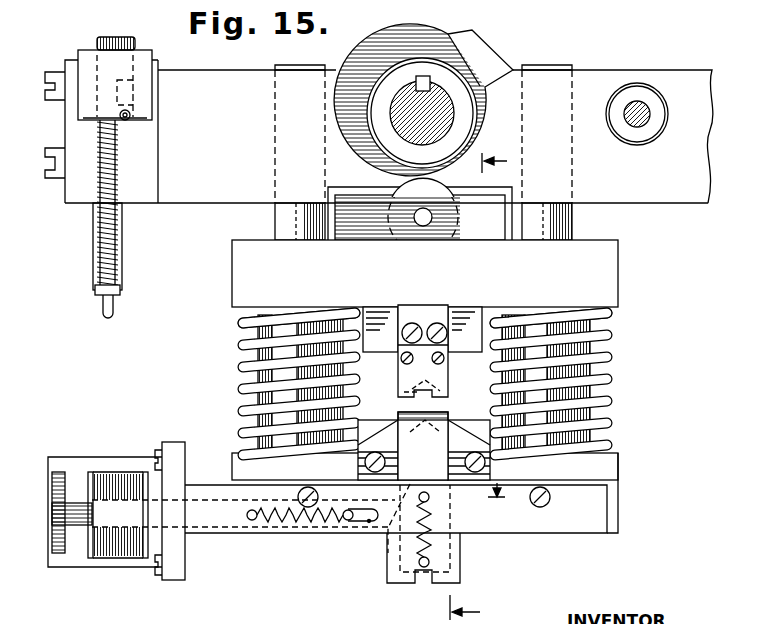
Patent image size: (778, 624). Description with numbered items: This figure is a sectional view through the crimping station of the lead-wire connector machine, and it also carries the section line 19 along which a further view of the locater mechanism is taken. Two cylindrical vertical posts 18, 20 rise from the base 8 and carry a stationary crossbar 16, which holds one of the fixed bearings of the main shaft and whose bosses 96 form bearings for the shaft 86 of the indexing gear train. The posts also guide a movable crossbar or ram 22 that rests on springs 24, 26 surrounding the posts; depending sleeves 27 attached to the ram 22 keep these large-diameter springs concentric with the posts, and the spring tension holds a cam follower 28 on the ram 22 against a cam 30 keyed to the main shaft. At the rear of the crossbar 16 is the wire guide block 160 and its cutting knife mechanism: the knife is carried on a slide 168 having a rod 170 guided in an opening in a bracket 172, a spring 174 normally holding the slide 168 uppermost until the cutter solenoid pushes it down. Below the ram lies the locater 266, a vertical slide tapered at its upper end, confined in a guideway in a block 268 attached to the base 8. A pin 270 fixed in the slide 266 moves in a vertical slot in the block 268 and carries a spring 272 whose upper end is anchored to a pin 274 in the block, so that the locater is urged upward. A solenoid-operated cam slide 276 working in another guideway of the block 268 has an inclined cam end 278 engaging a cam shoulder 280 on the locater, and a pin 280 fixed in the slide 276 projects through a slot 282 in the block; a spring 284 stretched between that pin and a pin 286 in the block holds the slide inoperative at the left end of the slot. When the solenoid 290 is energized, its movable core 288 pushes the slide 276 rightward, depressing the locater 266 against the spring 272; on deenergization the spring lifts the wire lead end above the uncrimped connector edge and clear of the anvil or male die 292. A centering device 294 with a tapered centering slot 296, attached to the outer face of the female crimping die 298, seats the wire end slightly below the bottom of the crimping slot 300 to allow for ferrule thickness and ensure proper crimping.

The base 8 is at (607, 463).
The crossbar 16 is at (188, 196).
The vertical post 18 is at (290, 222).
The section line 19 is at (484, 381).
The vertical post 20 is at (548, 220).
The movable crossbar or ram 22 is at (603, 258).
The spring 24 is at (240, 380).
The spring 26 is at (598, 382).
The depending sleeve 27 is at (243, 340).
The cam follower 28 is at (410, 183).
The cam 30 is at (352, 93).
The shaft 86 is at (645, 128).
The boss 96 is at (627, 96).
The guide block 160 is at (72, 128).
The slide 168 is at (116, 36).
The rod 170 is at (103, 307).
The bracket 172 is at (95, 290).
The spring 174 is at (93, 233).
The locater 266 is at (440, 417).
The block 268 is at (575, 520).
The pin 270 is at (430, 562).
The spring 272 is at (430, 525).
The pin 274 is at (430, 497).
The cam slide 276 is at (223, 513).
The inclined cam end 278 is at (393, 548).
The pin 280 is at (424, 459).
The slot 282 is at (372, 523).
The spring 284 is at (300, 521).
The pin 286 is at (252, 510).
The movable core 288 is at (195, 508).
The solenoid 290 is at (108, 495).
The anvil or male die 292 is at (415, 421).
The centering device 294 is at (444, 360).
The tapered centering slot 296 is at (430, 384).
The female crimping die 298 is at (430, 291).
The crimping slot 300 is at (412, 389).